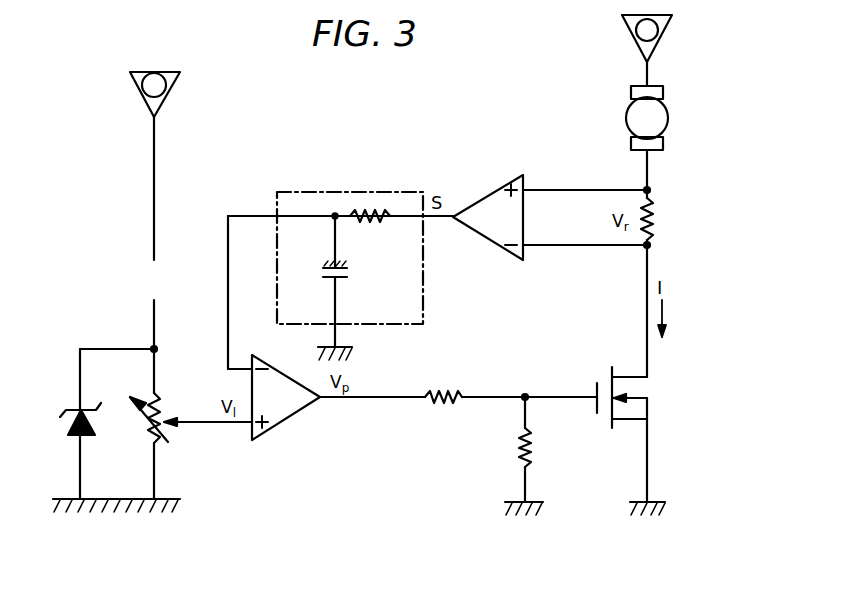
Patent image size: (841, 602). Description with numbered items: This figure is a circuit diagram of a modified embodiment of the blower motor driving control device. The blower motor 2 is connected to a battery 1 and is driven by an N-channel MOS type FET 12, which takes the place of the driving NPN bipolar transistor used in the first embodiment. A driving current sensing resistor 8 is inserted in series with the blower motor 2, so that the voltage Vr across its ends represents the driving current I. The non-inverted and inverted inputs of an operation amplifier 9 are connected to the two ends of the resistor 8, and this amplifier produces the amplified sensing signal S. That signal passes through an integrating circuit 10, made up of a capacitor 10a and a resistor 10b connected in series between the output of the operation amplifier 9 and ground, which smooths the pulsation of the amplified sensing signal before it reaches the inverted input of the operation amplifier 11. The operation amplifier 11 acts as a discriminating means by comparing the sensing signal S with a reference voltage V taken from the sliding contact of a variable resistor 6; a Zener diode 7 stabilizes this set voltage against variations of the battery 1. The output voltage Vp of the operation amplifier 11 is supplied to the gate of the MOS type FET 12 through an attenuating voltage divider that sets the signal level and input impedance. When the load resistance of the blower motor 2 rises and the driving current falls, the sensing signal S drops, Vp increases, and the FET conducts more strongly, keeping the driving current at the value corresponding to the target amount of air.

The battery 1 is at (166, 80).
The blower motor 2 is at (667, 110).
The variable resistor 6 is at (158, 398).
The Zener diode 7 is at (70, 432).
The driving current sensing resistor 8 is at (652, 217).
The operation amplifier 9 is at (482, 196).
The integrating circuit 10 is at (380, 258).
The capacitor 10a is at (323, 268).
The resistor 10b is at (386, 218).
The operation amplifier 11 is at (298, 413).
The MOS type FET 12 is at (634, 389).